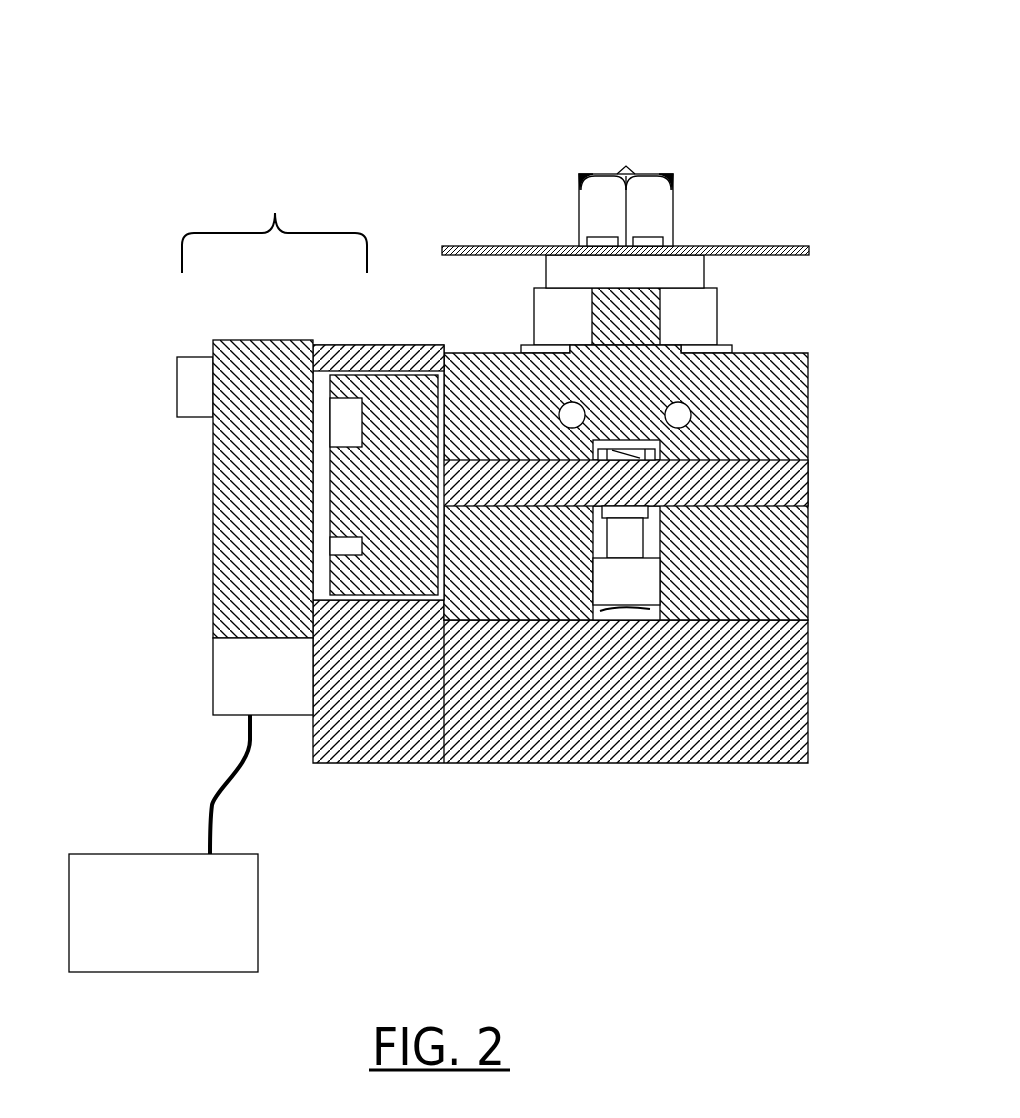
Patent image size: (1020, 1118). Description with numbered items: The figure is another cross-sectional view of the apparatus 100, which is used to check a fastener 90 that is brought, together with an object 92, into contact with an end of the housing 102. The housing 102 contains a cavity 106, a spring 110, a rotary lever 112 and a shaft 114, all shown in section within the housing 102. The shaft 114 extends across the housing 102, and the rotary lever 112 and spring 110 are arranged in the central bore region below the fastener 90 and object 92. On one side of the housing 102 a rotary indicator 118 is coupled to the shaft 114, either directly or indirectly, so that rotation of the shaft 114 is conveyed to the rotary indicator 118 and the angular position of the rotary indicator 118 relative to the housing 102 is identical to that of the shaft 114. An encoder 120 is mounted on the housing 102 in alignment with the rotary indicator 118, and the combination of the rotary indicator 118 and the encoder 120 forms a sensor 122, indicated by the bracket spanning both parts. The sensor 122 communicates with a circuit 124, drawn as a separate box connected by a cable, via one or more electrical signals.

The apparatus 100 is at (409, 40).
The fastener 90 is at (652, 174).
The object 92 is at (777, 246).
The housing 102 is at (807, 363).
The cavity 106 is at (650, 545).
The spring 110 is at (655, 604).
The rotary lever 112 is at (645, 446).
The shaft 114 is at (807, 490).
The rotary indicator 118 is at (374, 388).
The encoder 120 is at (252, 341).
The sensor 122 is at (274, 229).
The circuit 124 is at (135, 854).